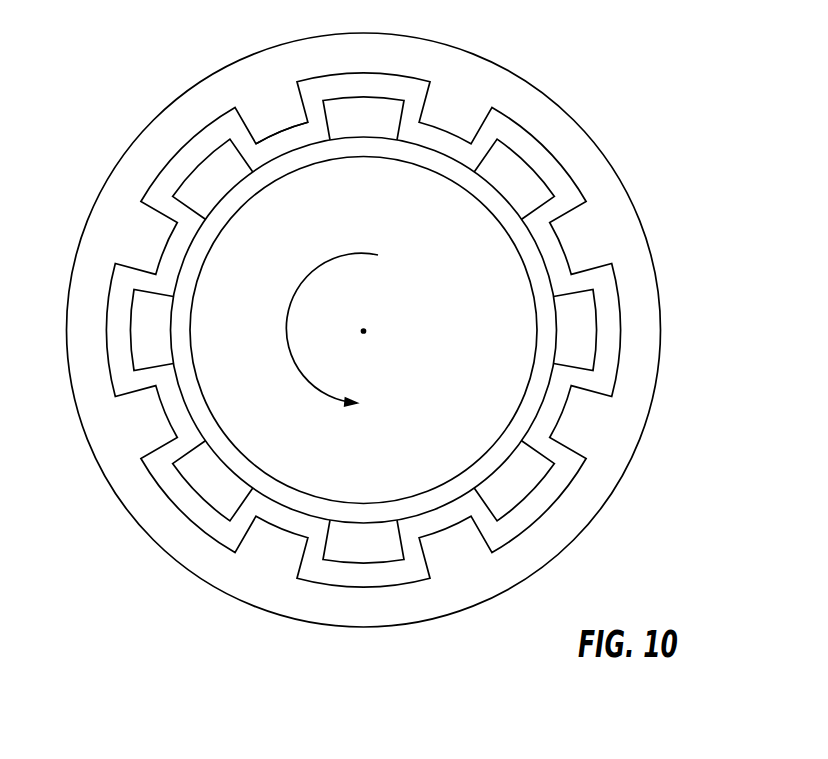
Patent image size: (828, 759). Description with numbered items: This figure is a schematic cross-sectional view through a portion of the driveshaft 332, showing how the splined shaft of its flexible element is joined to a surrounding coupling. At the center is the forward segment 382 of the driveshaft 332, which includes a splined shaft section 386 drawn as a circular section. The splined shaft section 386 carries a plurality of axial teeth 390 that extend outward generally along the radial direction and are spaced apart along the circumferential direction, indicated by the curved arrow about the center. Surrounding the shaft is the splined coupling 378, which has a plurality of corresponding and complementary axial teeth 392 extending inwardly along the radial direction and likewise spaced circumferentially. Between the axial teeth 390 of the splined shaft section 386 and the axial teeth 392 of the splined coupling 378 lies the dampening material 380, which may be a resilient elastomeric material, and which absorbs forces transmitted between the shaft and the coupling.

The driveshaft 332 is at (418, 313).
The splined coupling 378 is at (528, 97).
The dampening material 380 is at (440, 140).
The forward segment 382 is at (213, 245).
The splined shaft section 386 is at (213, 365).
The axial teeth 390 is at (205, 172).
The axial teeth 392 is at (267, 120).